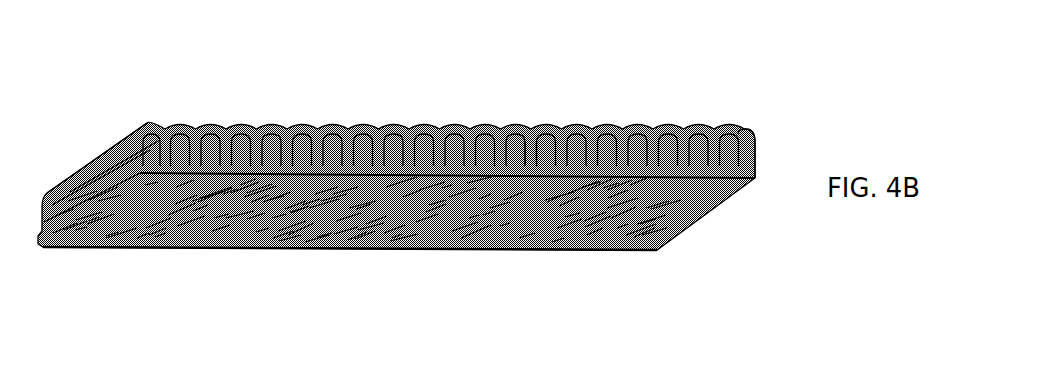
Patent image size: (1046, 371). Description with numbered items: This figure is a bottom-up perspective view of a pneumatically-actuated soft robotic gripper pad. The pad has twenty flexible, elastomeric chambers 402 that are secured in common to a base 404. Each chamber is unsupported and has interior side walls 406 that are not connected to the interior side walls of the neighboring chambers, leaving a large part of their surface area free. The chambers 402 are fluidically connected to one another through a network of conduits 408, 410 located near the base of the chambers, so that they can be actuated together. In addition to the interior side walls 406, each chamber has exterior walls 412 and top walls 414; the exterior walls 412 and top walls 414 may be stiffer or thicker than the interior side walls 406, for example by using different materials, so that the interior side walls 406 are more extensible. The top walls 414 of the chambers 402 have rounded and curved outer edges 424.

The chambers 402 is at (578, 128).
The base 404 is at (62, 228).
The interior side walls 406 is at (540, 155).
The conduits 408 is at (410, 223).
The conduits 410 is at (475, 238).
The exterior walls 412 is at (742, 153).
The top walls 414 is at (518, 128).
The rounded and curved outer edges 424 is at (110, 158).